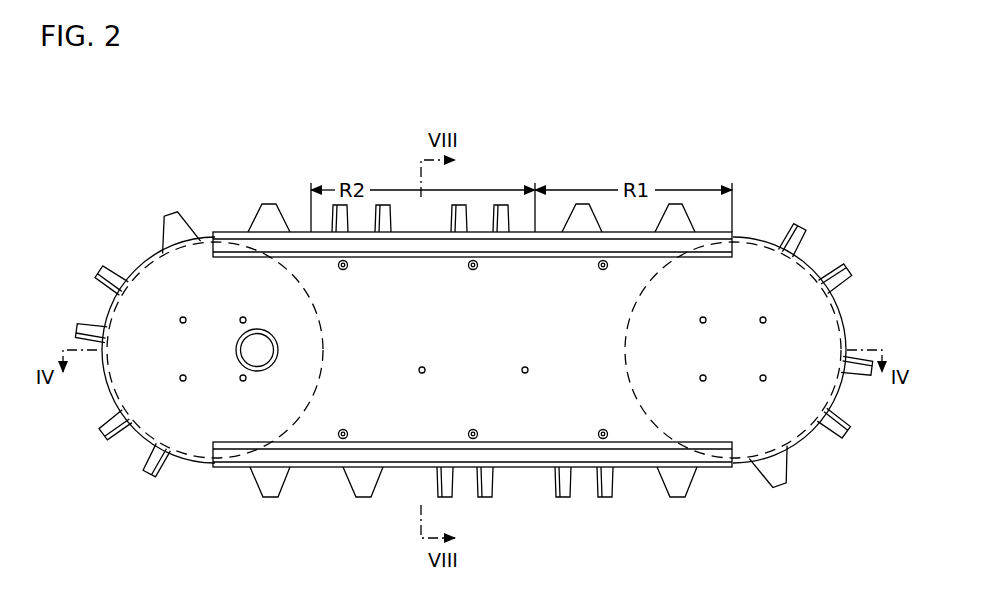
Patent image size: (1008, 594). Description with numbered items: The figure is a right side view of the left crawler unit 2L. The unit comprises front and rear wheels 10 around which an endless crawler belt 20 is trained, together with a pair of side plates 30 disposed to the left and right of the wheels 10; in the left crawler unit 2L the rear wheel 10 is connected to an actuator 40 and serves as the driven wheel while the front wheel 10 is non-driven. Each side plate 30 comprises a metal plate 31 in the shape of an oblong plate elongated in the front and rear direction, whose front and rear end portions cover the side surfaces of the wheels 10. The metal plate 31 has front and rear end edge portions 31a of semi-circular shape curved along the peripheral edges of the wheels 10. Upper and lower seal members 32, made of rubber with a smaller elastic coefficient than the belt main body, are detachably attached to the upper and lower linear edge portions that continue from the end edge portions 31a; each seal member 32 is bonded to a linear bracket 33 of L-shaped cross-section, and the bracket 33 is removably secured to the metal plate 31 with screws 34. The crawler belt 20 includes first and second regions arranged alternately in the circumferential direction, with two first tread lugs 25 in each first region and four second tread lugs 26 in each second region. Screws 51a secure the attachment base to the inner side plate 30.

The left crawler unit 2L is at (803, 207).
The wheel 10 is at (322, 342).
The crawler belt 20 is at (203, 232).
The first tread lug 25 is at (586, 205).
The second tread lug 26 is at (500, 205).
The side plate 30 is at (472, 338).
The metal plate 31 is at (530, 408).
The end edge portion 31a is at (139, 262).
The seal member 32 is at (240, 232).
The bracket 33 is at (415, 258).
The screw 34 is at (473, 271).
The actuator 40 is at (263, 372).
The screw 51a is at (183, 382).